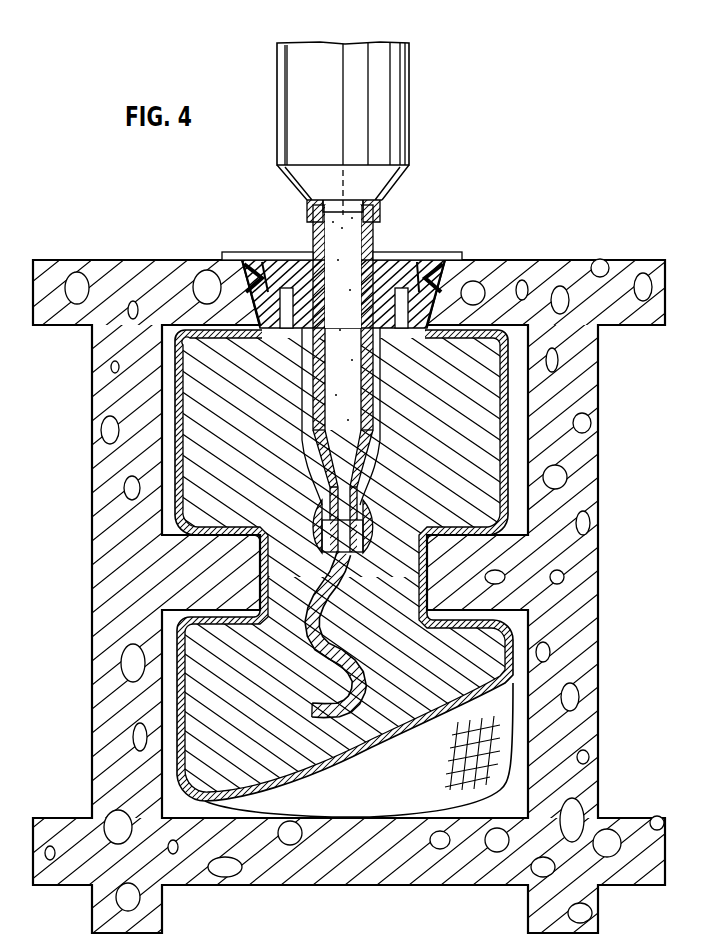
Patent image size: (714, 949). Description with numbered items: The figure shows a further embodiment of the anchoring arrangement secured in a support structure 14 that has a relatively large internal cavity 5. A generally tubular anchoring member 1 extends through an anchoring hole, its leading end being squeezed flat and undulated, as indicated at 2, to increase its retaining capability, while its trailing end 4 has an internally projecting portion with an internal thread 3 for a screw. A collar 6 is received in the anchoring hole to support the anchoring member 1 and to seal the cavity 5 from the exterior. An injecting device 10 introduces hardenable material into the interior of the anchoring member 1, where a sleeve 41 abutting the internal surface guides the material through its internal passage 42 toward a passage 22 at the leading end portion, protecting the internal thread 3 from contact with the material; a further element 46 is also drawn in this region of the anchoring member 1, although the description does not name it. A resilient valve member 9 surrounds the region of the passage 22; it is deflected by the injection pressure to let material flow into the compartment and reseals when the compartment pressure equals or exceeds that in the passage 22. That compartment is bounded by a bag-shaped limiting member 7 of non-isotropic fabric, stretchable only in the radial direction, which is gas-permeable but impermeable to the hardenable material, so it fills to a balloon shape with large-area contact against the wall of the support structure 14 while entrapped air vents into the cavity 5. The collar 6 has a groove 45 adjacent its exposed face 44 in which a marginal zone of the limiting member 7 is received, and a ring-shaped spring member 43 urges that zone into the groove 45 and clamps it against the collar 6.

The anchoring member 1 is at (382, 420).
The squeezed flat and undulated leading end 2 is at (365, 682).
The internal thread 3 is at (393, 260).
The trailing end 4 is at (292, 252).
The internal cavity 5 is at (170, 345).
The collar 6 is at (425, 257).
The limiting member 7 is at (178, 728).
The valve member 9 is at (365, 530).
The injecting device 10 is at (362, 70).
The support structure 14 is at (553, 256).
The passage 22 is at (362, 560).
The sleeve 41 is at (318, 391).
The internal passage 42 is at (352, 232).
The ring-shaped spring member 43 is at (233, 272).
The exposed face 44 is at (288, 246).
The groove 45 is at (262, 268).
The filling tube 46 is at (322, 440).